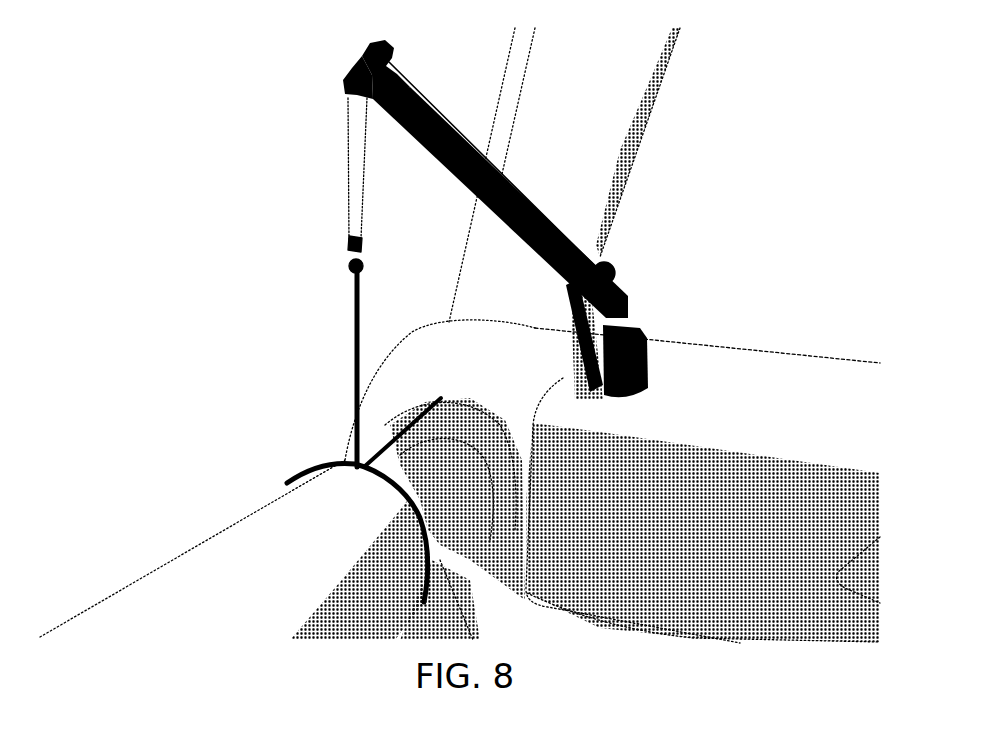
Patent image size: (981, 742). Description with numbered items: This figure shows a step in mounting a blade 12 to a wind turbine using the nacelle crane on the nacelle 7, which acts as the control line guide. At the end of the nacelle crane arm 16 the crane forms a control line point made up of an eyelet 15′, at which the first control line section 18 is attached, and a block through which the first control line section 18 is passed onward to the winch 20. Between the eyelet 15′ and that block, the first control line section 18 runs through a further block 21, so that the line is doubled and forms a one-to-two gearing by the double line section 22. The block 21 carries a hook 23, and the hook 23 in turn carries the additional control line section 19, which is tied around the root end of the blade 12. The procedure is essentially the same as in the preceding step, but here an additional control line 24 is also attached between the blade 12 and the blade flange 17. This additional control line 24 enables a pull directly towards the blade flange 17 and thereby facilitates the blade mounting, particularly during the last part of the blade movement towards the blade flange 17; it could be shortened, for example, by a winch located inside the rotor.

The nacelle 7 is at (827, 388).
The blade 12 is at (207, 558).
The eyelet 15′ is at (345, 83).
The nacelle crane arm 16 is at (467, 152).
The blade flange 17 is at (474, 437).
The first control line section 18 is at (540, 150).
The additional control line section 19 is at (357, 318).
The winch 20 is at (608, 270).
The block 21 is at (350, 244).
The double line section 22 is at (357, 175).
The hook 23 is at (352, 265).
The additional control line 24 is at (398, 433).